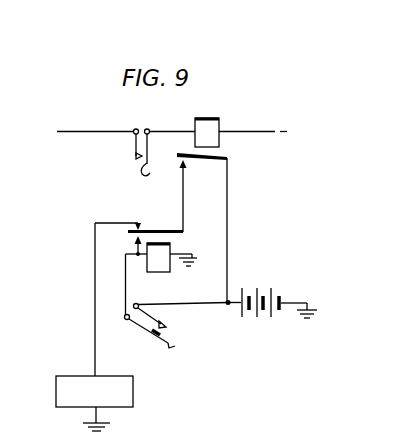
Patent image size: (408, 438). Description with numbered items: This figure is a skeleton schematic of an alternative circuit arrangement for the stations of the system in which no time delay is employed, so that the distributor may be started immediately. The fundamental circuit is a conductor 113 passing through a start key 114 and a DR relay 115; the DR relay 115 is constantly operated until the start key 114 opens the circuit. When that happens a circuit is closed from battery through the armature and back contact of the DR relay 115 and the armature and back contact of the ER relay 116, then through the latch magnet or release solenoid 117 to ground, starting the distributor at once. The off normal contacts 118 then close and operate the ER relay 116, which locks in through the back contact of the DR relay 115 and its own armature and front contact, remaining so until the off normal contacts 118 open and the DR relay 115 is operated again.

The conductor 113 is at (70, 131).
The start key 114 is at (133, 158).
The DR relay 115 is at (213, 128).
The ER relay 116 is at (159, 273).
The latch magnet or release solenoid 117 is at (129, 405).
The off normal contacts 118 is at (148, 333).